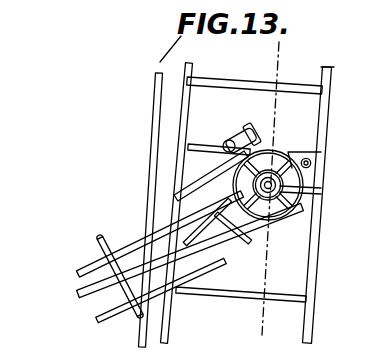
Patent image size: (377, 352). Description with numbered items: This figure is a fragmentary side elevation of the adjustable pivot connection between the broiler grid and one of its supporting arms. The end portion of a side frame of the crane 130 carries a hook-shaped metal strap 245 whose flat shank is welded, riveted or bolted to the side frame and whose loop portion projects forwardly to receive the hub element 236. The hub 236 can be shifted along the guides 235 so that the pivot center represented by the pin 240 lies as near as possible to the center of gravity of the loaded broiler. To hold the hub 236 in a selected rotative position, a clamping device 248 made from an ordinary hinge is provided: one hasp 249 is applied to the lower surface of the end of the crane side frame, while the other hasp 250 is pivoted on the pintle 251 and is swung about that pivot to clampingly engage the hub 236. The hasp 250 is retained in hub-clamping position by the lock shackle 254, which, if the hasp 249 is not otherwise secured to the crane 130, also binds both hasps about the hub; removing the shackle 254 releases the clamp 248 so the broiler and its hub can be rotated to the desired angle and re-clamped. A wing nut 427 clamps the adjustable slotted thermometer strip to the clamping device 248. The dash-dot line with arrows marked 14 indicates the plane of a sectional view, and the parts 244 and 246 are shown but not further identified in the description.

The section line 14- 14 is at (263, 65).
The crane 130 is at (150, 229).
The guides 235 is at (190, 124).
The hub element 236 is at (296, 215).
The pin 240 is at (286, 186).
The upright post 244 is at (338, 205).
The hook-shaped metal strap 245 is at (292, 199).
The brace members 246 is at (186, 174).
The clamp 248 is at (284, 143).
The hasp 249 is at (213, 268).
The hasp 250 is at (178, 200).
The pintle 251 is at (311, 165).
The lock shackle 254 is at (96, 241).
The wing nut 427 is at (243, 125).